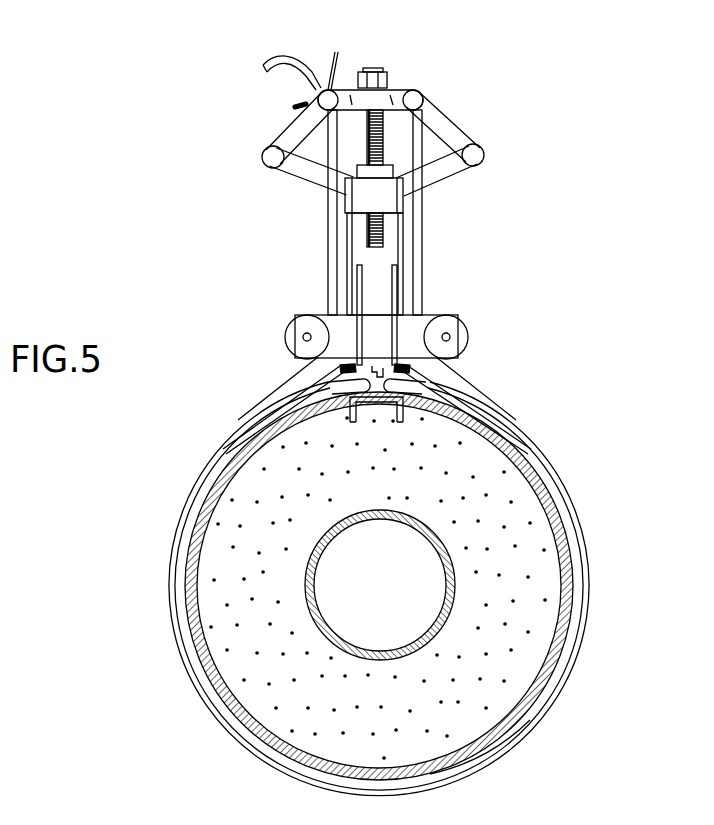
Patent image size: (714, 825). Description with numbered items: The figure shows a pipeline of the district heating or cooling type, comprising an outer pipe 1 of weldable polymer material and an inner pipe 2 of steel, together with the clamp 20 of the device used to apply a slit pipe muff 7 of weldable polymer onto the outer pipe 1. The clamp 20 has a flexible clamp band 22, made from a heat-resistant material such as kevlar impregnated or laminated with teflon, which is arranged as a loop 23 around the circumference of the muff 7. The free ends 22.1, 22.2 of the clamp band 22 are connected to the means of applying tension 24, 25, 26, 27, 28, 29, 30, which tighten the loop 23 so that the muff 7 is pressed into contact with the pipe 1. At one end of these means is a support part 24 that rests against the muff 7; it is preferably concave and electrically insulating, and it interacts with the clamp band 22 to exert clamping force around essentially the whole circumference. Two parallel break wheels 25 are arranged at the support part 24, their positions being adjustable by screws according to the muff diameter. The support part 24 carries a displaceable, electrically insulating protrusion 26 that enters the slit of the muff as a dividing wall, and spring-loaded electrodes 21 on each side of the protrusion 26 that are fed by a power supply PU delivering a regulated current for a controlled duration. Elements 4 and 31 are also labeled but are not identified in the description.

The outer pipe 1 is at (191, 593).
The inner pipe 2 is at (315, 578).
The insulation 4 is at (527, 557).
The muff 7 is at (197, 503).
The clamp 20 is at (234, 197).
The electrodes 21 is at (310, 372).
The clamp band 22 is at (422, 296).
The free end of the clamp band 22.1 is at (445, 126).
The free end of the clamp band 22.2 is at (282, 55).
The loop 23 is at (490, 760).
The support part 24 is at (432, 375).
The break wheels 25 is at (293, 333).
The protrusion 26 is at (466, 386).
The means of applying tension 27 is at (383, 195).
The means of applying tension 28 is at (383, 93).
The means of applying tension 29 is at (387, 130).
The means of applying tension 30 is at (302, 125).
The wire 31 is at (335, 52).
The power supply PU is at (303, 368).